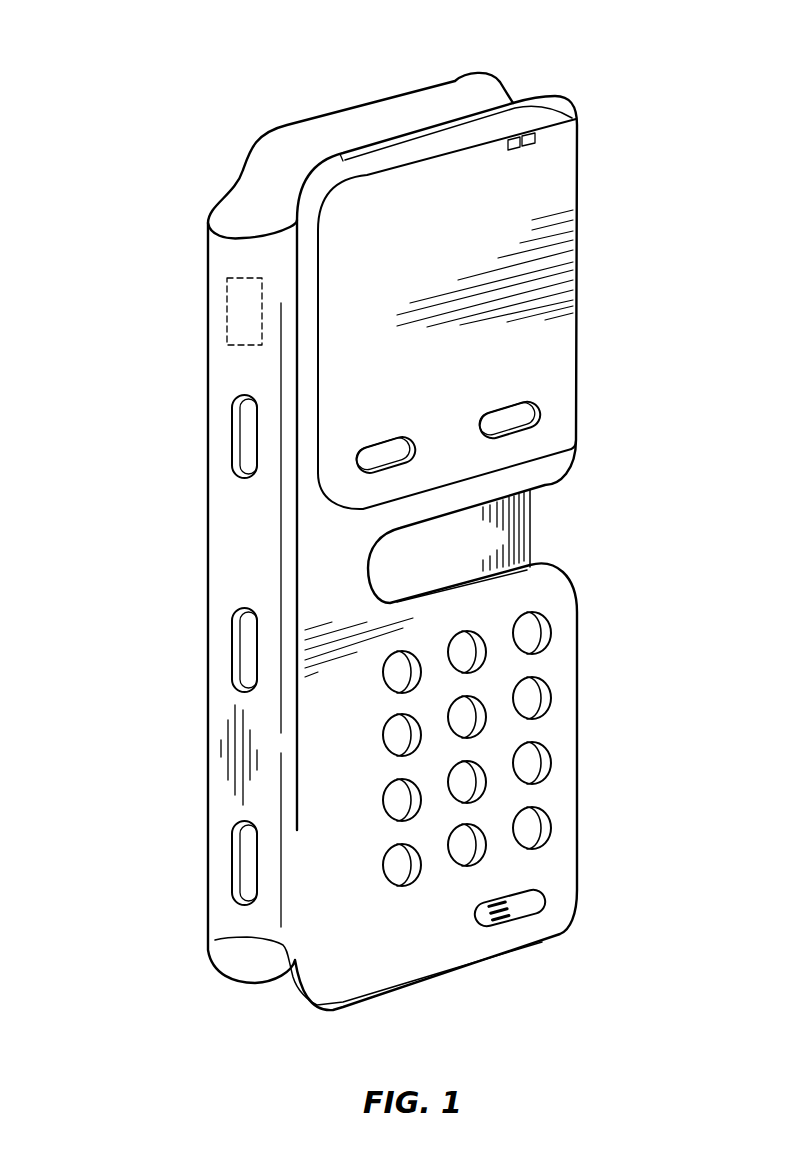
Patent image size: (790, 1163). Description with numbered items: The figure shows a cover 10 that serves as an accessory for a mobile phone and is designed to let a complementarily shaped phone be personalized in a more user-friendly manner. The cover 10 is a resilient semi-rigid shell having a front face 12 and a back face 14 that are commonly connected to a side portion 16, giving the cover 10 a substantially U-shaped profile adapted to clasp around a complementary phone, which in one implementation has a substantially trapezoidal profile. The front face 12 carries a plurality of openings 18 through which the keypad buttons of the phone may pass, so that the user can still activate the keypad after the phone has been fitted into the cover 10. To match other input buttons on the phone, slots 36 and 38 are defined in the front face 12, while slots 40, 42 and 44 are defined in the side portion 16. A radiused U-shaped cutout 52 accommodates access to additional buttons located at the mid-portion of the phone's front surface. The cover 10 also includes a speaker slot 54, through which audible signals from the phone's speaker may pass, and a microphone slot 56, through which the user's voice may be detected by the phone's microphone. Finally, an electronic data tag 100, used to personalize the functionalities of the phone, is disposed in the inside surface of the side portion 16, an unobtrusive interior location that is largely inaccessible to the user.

The cover 10 is at (138, 100).
The front face 12 is at (563, 869).
The back face 14 is at (468, 88).
The side portion 16 is at (205, 545).
The openings 18 is at (550, 628).
The slot 36 is at (420, 432).
The slot 38 is at (547, 410).
The slot 40 is at (232, 865).
The slot 42 is at (232, 650).
The slot 44 is at (232, 436).
The radiused U-shaped cutout 52 is at (500, 538).
The speaker slot 54 is at (530, 905).
The microphone slot 56 is at (535, 135).
The electronic data tag 100 is at (227, 300).